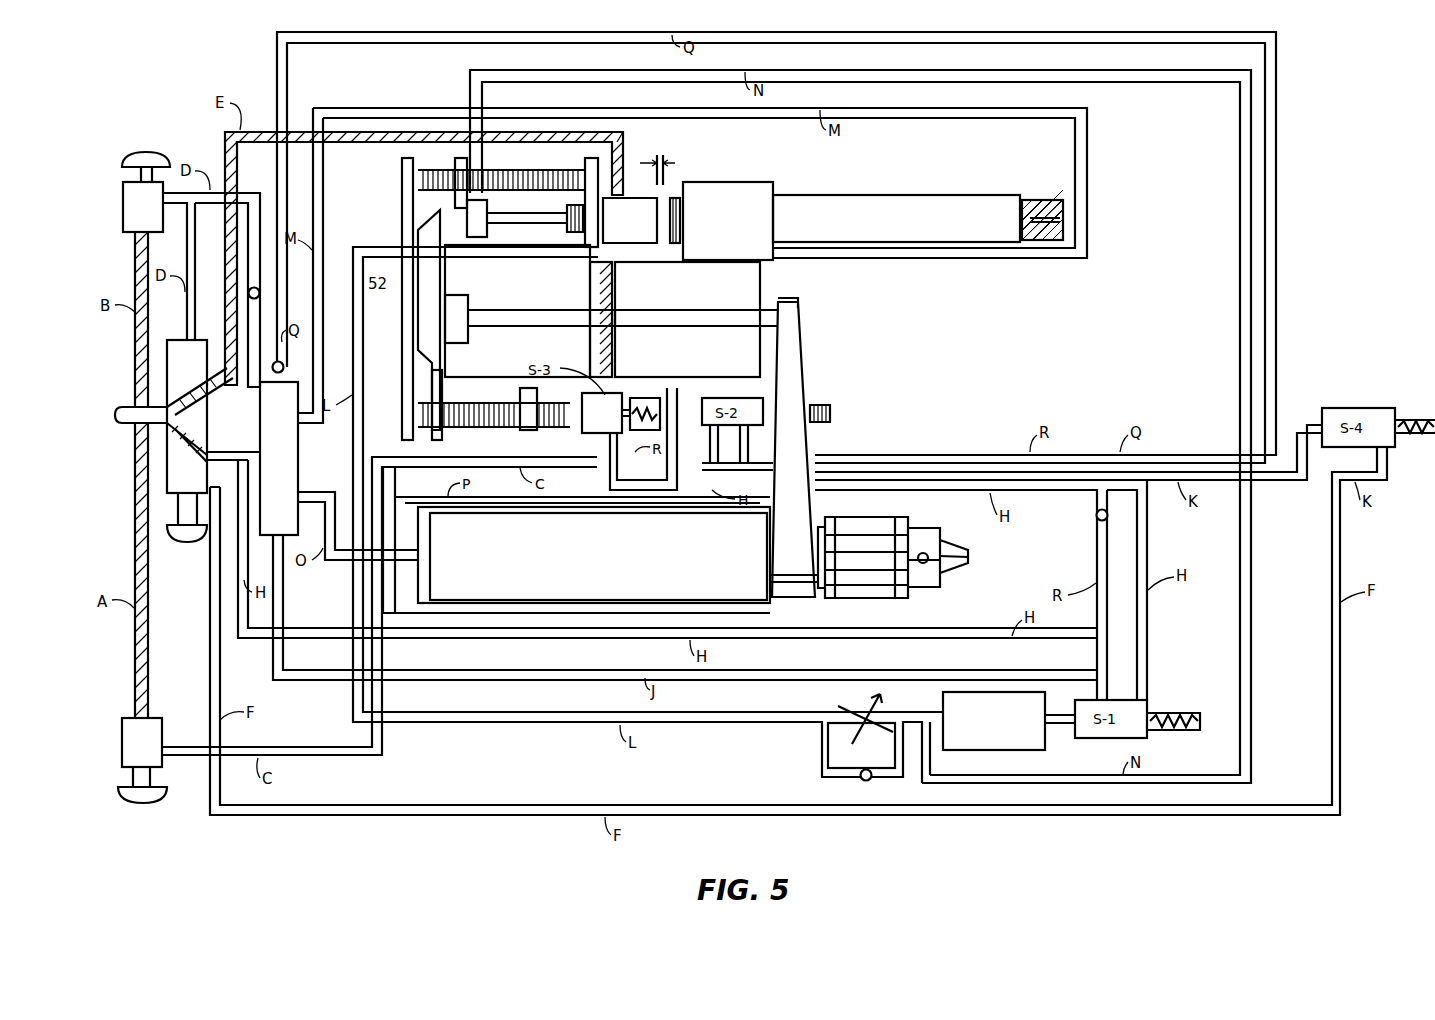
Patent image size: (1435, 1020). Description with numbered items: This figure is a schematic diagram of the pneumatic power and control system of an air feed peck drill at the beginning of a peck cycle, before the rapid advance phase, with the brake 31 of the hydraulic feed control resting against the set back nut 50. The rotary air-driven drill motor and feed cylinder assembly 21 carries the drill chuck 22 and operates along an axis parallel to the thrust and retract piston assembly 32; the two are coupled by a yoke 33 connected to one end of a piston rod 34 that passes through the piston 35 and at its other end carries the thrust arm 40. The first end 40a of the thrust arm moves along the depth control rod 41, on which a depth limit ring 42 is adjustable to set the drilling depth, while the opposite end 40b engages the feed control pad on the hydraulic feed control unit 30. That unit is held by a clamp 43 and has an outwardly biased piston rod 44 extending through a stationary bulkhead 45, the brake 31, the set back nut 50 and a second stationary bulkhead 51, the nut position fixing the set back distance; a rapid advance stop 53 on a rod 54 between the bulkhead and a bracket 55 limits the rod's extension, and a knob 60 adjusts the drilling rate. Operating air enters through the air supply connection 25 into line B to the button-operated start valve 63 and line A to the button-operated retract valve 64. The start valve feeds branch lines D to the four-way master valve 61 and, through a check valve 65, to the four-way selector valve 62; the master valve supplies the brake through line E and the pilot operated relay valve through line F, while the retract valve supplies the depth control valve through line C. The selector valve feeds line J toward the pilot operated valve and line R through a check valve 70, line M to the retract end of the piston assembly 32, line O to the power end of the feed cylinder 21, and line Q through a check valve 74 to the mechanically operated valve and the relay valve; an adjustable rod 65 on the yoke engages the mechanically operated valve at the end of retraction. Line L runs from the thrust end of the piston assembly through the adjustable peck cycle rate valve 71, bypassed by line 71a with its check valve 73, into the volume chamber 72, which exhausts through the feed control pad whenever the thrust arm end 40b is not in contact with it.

The drill motor and feed cylinder assembly 21 is at (760, 592).
The drill chuck 22 is at (905, 598).
The air supply connection 25 is at (118, 416).
The hydraulic feed control unit 30 is at (976, 190).
The brake 31 is at (633, 160).
The thrust and retract piston assembly 32 is at (783, 276).
The yoke 33 is at (798, 378).
The piston rod 34 is at (790, 310).
The piston 35 is at (598, 278).
The thrust arm 40 is at (440, 282).
The first end of thrust arm 40a is at (440, 392).
The opposite end of thrust arm 40b is at (435, 222).
The depth control rod 41 is at (458, 428).
The depth limit ring 42 is at (535, 430).
The clamp 43 is at (760, 182).
The piston rod 44 is at (545, 220).
The stationary bulkhead 45 is at (680, 220).
The set back nut 50 is at (612, 140).
The stationary bulkhead 51 is at (590, 158).
The rapid advance stop 53 is at (455, 200).
The rod 54 is at (408, 160).
The bracket 55 is at (405, 176).
The knob 60 is at (1064, 225).
The master valve 61 is at (199, 452).
The selector valve 62 is at (279, 458).
The start valve 63 is at (144, 179).
The retract valve 64 is at (135, 772).
The check valve 65 is at (260, 296).
The check valve 70 is at (1096, 518).
The peck cycle rate valve 71 is at (850, 715).
The bypass air line 71a is at (822, 748).
The volume chamber 72 is at (1030, 750).
The check valve 73 is at (860, 778).
The check valve 74 is at (284, 368).